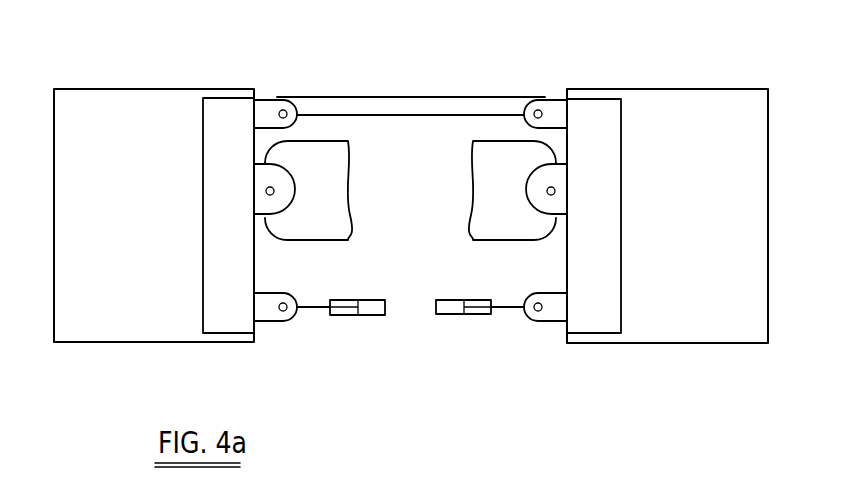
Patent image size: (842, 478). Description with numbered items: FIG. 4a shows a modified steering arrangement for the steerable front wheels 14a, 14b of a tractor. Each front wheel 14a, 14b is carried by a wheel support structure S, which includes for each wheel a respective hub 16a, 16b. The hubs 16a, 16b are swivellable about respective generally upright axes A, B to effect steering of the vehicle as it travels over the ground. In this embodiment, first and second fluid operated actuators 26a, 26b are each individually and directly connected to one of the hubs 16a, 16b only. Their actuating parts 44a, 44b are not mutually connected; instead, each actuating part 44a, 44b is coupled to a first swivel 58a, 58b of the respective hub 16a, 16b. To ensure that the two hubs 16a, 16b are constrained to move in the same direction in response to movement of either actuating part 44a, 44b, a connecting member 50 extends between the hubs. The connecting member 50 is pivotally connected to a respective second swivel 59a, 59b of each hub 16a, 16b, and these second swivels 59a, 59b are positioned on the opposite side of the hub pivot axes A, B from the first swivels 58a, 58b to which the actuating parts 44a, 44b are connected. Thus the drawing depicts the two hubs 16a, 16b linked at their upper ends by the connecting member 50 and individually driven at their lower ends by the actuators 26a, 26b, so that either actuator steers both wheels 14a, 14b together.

The front wheel 14a is at (677, 332).
The front wheel 14b is at (148, 333).
The hub 16a is at (613, 183).
The hub 16b is at (212, 223).
The connecting member 50 is at (308, 103).
The second swivel 59a is at (557, 107).
The second swivel 59b is at (263, 107).
The first swivel 58a is at (550, 318).
The first swivel 58b is at (267, 318).
The actuating part 44a is at (508, 307).
The actuating part 44b is at (308, 307).
The first fluid operated actuator 26a is at (473, 314).
The second fluid operated actuator 26b is at (347, 315).
The upright axis A is at (530, 100).
The upright axis B is at (274, 194).
The wheel support structure S is at (411, 303).